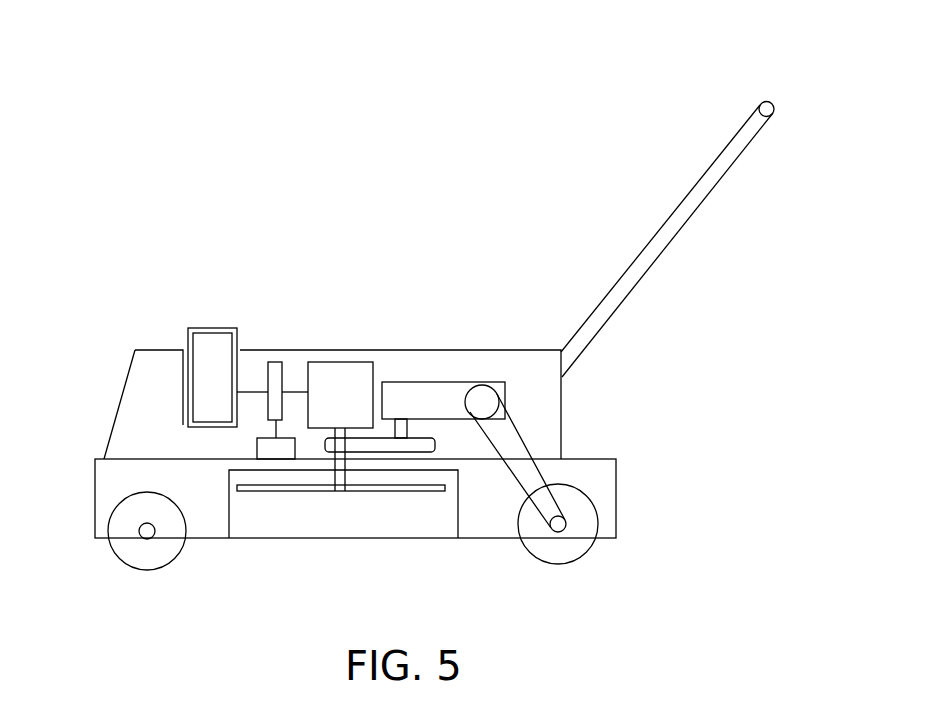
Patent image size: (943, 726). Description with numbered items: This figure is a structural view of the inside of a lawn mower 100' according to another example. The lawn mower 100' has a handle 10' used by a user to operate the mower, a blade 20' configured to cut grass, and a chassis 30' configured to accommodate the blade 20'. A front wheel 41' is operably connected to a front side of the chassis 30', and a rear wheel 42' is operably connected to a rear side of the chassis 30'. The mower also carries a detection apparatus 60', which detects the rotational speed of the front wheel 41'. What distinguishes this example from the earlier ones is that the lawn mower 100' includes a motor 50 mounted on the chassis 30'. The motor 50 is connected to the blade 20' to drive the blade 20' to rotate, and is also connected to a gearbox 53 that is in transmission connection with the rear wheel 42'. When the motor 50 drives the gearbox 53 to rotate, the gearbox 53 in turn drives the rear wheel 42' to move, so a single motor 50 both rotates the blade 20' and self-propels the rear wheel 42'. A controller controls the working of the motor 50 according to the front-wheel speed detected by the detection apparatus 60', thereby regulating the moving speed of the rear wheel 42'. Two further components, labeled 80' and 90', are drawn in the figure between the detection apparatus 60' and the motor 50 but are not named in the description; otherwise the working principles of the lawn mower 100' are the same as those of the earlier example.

The lawn mower 100' is at (426, 333).
The handle 10' is at (686, 240).
The blade 20' is at (343, 525).
The chassis 30' is at (396, 476).
The front wheel 41' is at (121, 569).
The rear wheel 42' is at (615, 552).
The motor 50 is at (345, 355).
The gearbox 53 is at (448, 380).
The detection apparatus 60' is at (168, 435).
The controller 80' is at (314, 349).
The battery 90' is at (240, 337).